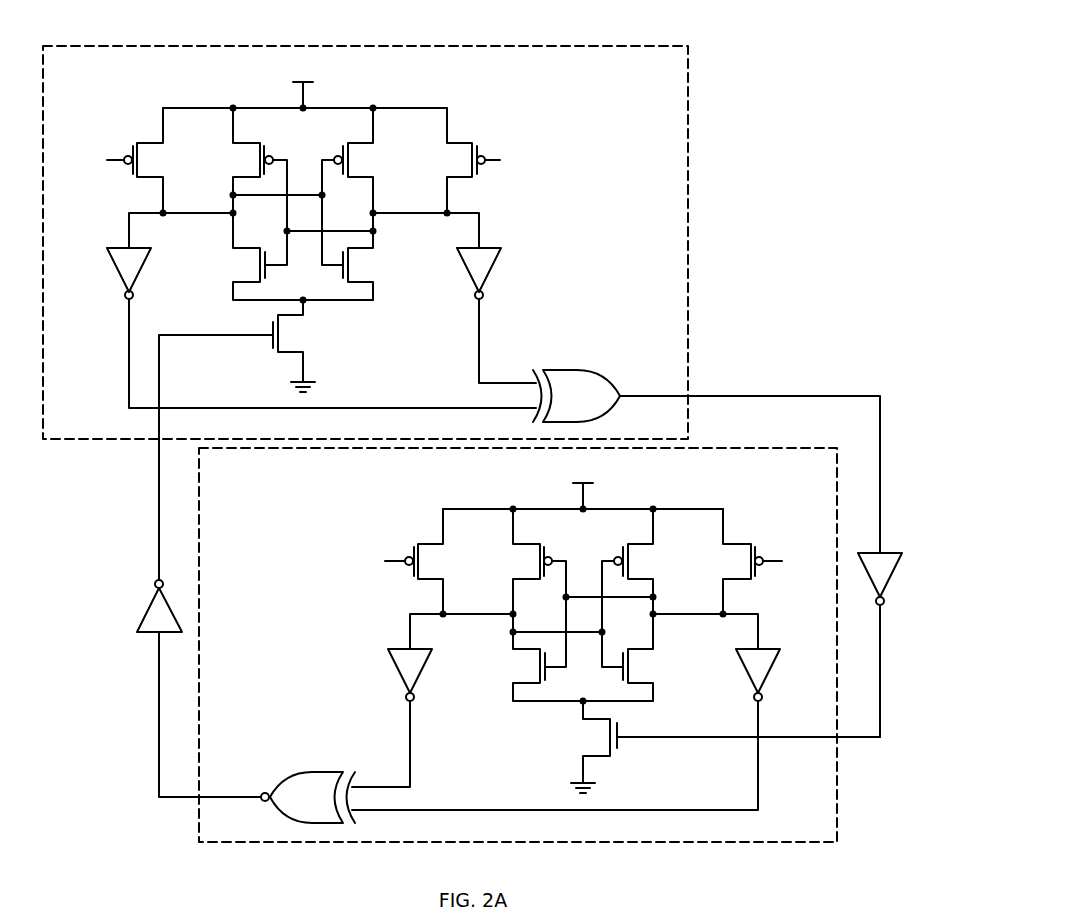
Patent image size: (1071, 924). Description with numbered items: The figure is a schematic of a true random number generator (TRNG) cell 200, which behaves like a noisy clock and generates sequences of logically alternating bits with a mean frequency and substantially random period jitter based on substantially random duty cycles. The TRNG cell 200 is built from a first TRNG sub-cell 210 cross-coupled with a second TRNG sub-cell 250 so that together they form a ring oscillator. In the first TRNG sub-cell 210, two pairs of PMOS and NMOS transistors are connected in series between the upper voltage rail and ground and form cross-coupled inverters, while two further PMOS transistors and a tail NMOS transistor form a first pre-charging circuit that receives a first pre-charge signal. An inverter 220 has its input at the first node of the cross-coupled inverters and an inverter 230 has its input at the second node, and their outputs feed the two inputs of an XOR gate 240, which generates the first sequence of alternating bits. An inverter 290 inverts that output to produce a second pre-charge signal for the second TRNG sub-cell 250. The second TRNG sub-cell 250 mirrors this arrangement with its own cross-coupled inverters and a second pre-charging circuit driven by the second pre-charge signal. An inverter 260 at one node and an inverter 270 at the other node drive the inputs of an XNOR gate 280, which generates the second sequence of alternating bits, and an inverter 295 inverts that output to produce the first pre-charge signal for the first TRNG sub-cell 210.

The true random number generator (TRNG) cell 200 is at (748, 48).
The first TRNG sub-cell 210 is at (678, 78).
The inverter 220 is at (115, 270).
The inverter 230 is at (490, 270).
The exclusive-OR (XOR) gate 240 is at (563, 368).
The second TRNG sub-cell 250 is at (827, 479).
The inverter 260 is at (393, 670).
The inverter 270 is at (773, 670).
The exclusive-NOR (XNOR) gate 280 is at (308, 770).
The inverter 290 is at (888, 552).
The inverter 295 is at (150, 598).